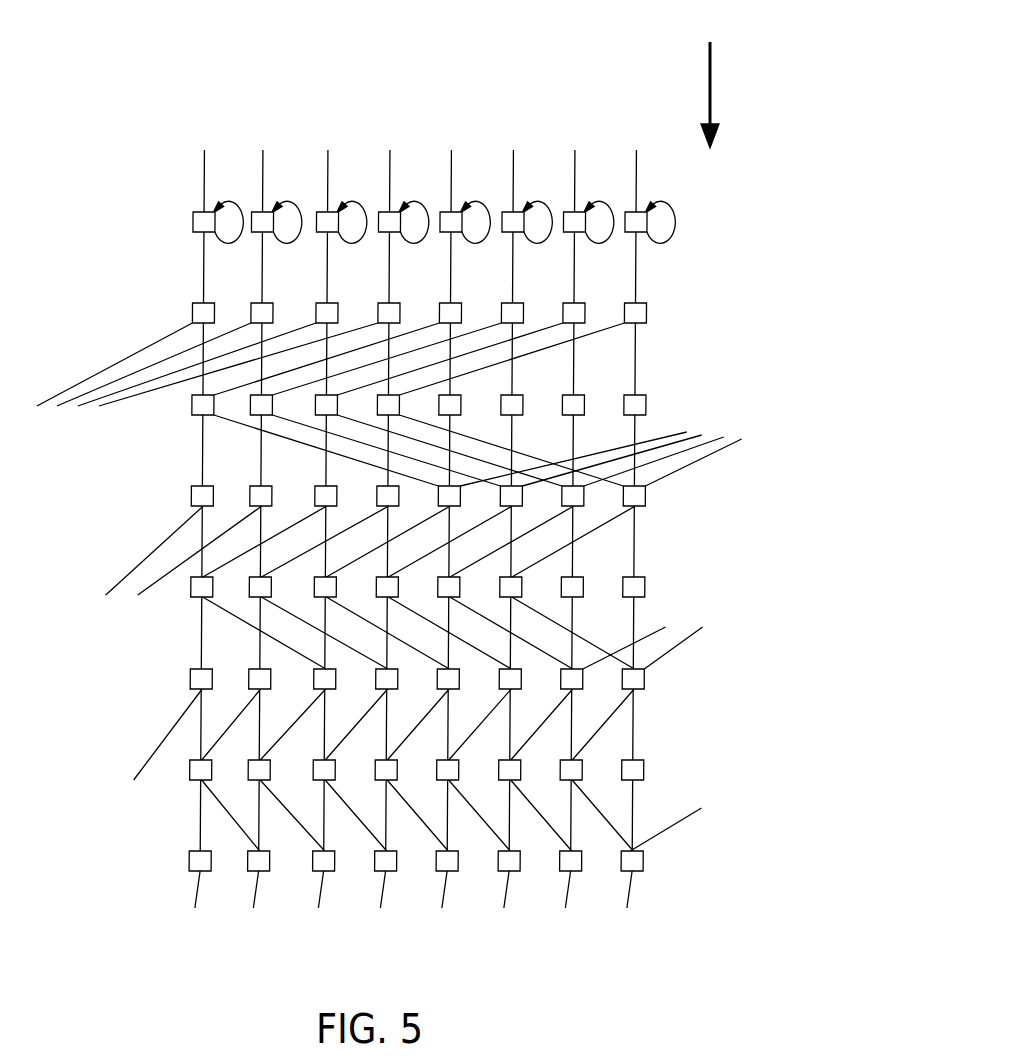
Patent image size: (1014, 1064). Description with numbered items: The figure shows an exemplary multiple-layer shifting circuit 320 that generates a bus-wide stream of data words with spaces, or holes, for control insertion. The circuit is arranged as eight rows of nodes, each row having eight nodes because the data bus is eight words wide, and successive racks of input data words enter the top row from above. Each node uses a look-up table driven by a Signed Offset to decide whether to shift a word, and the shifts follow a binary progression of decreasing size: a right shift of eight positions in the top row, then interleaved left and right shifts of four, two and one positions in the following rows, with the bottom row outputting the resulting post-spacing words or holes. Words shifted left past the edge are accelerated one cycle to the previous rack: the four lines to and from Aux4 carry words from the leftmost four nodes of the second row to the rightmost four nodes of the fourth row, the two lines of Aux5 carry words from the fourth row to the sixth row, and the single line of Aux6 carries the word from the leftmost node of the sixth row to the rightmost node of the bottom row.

The multiple-layer shifting circuit 320 is at (707, 1040).
The Aux4 acceleration path Aux4 is at (390, 404).
The Aux5 acceleration path Aux5 is at (409, 587).
The Aux6 acceleration path Aux6 is at (430, 770).